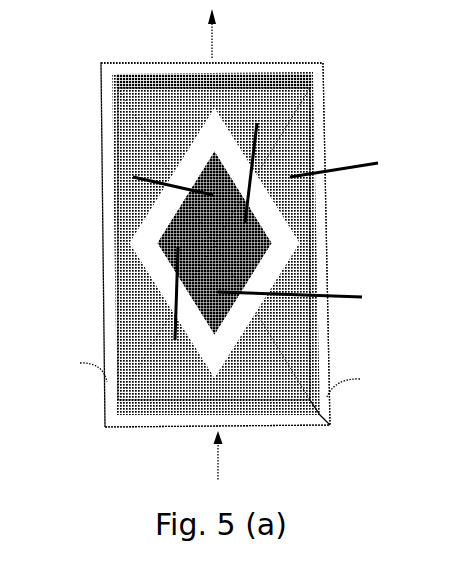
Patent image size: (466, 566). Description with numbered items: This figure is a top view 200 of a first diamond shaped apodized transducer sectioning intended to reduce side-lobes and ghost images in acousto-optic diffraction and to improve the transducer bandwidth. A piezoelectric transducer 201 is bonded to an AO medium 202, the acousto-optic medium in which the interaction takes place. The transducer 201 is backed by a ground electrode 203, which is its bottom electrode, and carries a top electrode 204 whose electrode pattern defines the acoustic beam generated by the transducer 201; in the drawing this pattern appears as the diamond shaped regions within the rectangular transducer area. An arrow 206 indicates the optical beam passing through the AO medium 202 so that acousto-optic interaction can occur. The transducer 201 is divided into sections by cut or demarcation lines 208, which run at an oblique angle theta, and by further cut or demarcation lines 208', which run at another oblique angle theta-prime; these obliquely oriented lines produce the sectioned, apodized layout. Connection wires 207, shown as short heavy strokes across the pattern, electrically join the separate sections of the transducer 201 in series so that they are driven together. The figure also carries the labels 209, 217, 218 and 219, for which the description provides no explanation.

The top view 200 is at (243, 246).
The piezoelectric transducer 201 is at (150, 88).
The AO medium 202 is at (326, 120).
The ground electrode 203 is at (305, 406).
The top electrode 204 is at (271, 230).
The optical beam arrow 206 is at (250, 461).
The connection wires 207 is at (118, 190).
The cut or demarcation lines 208 is at (261, 236).
The cut or demarcation lines 208' is at (75, 220).
The lower white diamond band 209 is at (232, 330).
The right edge 217 is at (394, 244).
The bottom edge 218 is at (285, 388).
The top edge 219 is at (286, 43).